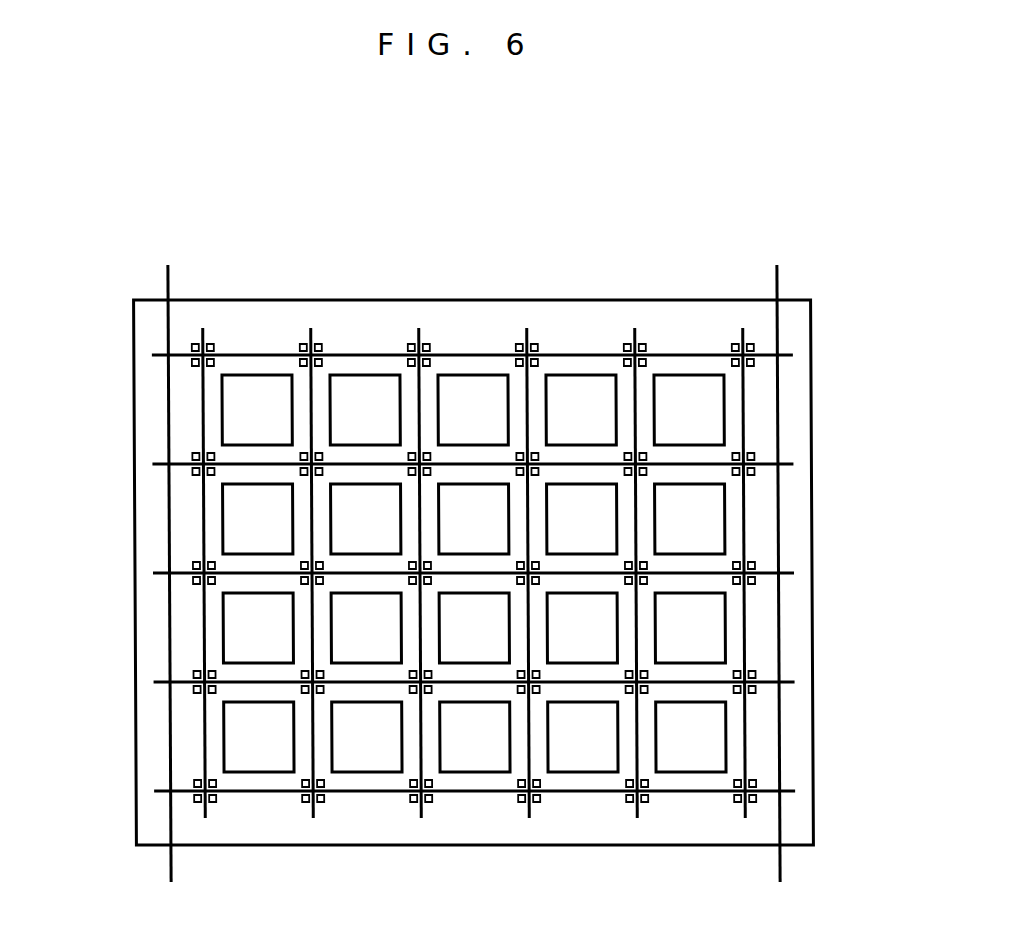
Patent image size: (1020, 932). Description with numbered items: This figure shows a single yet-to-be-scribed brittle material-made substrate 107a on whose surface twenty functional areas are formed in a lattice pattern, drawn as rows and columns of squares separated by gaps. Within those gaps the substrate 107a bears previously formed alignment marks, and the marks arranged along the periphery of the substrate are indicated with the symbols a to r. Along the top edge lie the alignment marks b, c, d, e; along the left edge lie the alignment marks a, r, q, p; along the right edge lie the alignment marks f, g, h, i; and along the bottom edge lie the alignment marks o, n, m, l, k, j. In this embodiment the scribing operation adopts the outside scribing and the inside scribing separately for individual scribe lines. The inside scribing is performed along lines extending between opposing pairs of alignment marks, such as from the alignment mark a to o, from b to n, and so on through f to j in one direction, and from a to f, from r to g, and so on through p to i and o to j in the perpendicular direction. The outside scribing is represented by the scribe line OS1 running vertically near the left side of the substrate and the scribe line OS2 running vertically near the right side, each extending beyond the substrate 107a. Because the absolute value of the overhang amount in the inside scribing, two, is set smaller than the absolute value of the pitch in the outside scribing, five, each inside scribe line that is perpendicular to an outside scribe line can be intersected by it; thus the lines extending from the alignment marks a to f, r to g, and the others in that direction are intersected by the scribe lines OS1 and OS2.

The brittle material-made substrate 107a is at (374, 300).
The scribe line OS1 is at (166, 280).
The scribe line OS2 is at (778, 282).
The alignment mark a is at (188, 343).
The alignment mark b is at (295, 341).
The alignment mark c is at (429, 341).
The alignment mark d is at (538, 341).
The alignment mark e is at (646, 341).
The alignment mark f is at (755, 367).
The alignment mark g is at (755, 477).
The alignment mark h is at (754, 587).
The alignment mark i is at (753, 695).
The alignment mark j is at (750, 803).
The alignment mark k is at (655, 803).
The alignment mark l is at (541, 803).
The alignment mark m is at (433, 803).
The alignment mark n is at (323, 803).
The alignment mark o is at (218, 803).
The alignment mark p is at (187, 667).
The alignment mark q is at (187, 557).
The alignment mark r is at (188, 452).